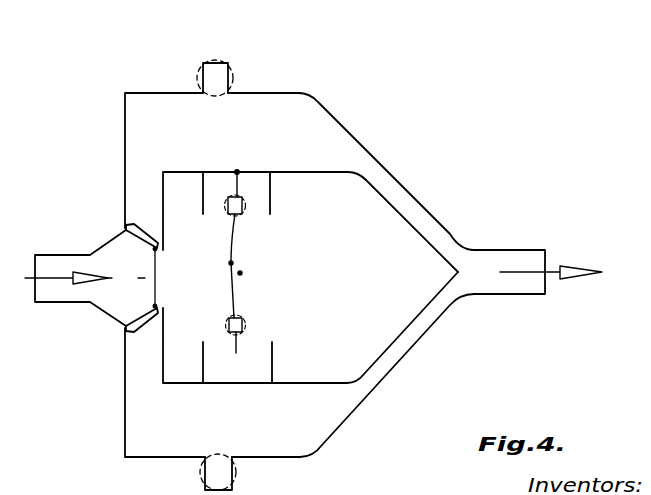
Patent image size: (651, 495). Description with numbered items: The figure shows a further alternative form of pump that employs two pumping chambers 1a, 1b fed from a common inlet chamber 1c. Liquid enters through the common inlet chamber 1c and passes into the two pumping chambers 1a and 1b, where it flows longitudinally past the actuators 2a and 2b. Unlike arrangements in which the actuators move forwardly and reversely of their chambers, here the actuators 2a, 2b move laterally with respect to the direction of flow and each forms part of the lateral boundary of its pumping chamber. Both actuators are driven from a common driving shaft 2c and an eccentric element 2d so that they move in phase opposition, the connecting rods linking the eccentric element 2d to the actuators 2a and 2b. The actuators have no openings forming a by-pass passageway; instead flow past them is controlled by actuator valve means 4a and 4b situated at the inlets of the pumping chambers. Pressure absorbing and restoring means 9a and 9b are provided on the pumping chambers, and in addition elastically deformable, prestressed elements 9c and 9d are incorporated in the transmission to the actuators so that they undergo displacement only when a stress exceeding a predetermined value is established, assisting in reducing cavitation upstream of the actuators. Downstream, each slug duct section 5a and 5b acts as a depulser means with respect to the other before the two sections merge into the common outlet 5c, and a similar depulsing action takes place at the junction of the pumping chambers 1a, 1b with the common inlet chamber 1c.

The pumping chamber 1a is at (170, 103).
The pumping chamber 1b is at (163, 452).
The common inlet chamber 1c is at (85, 278).
The actuator 2a is at (218, 170).
The actuator 2b is at (222, 365).
The common driving shaft 2c is at (251, 262).
The eccentric element 2d is at (237, 271).
The actuator valve means 4a is at (141, 224).
The actuator valve means 4b is at (141, 331).
The slug duct section 5a is at (400, 195).
The slug duct section 5b is at (400, 351).
The outlet 5c is at (498, 262).
The pressure absorbing and restoring means 9a is at (222, 69).
The pressure absorbing and restoring means 9b is at (230, 483).
The elastically deformable element 9c is at (245, 208).
The elastically deformable element 9d is at (245, 333).